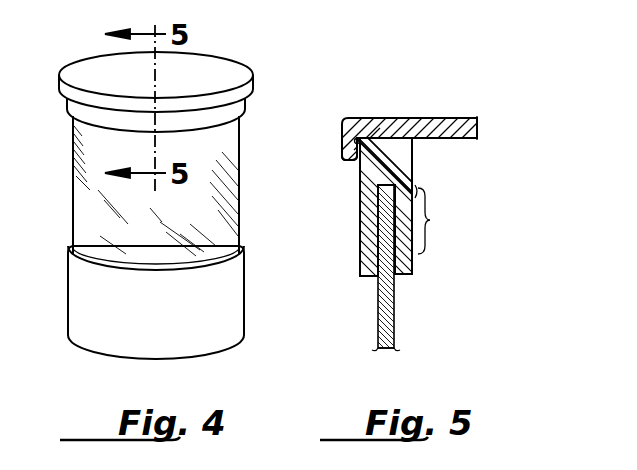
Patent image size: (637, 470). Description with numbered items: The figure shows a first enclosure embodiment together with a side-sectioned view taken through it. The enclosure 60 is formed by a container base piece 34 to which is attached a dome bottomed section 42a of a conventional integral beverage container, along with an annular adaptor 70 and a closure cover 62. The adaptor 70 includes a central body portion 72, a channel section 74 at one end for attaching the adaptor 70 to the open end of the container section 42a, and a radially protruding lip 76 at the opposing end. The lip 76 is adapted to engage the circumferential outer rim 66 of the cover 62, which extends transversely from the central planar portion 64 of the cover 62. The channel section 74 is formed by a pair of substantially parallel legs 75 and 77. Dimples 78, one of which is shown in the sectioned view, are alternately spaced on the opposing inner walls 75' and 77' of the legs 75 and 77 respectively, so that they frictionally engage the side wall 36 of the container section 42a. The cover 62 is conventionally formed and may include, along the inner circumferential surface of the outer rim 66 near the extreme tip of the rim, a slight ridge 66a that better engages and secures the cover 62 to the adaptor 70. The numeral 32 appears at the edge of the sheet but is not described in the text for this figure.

In FIG. 4, the container 32 is at (7, 81).
In FIG. 4, the container base piece 34 is at (232, 311).
In FIG. 5, the side wall 36 is at (398, 348).
In FIG. 4, the dome bottomed section 42a is at (240, 223).
In FIG. 5, the dome bottomed section 42a is at (396, 331).
In FIG. 4, the enclosure 60 is at (245, 133).
In FIG. 4, the closure cover 62 is at (96, 72).
In FIG. 5, the closure cover 62 is at (455, 118).
In FIG. 5, the central planar portion 64 is at (407, 128).
In FIG. 5, the circumferential outer rim 66 is at (345, 150).
In FIG. 5, the slight ridge 66a is at (357, 163).
In FIG. 4, the annular adaptor 70 is at (67, 103).
In FIG. 5, the annular adaptor 70 is at (413, 173).
In FIG. 5, the central body portion 72 is at (396, 152).
In FIG. 5, the channel section 74 is at (432, 219).
In FIG. 5, the leg 75 is at (344, 282).
In FIG. 5, the inner wall 75' is at (356, 302).
In FIG. 5, the radially protruding lip 76 is at (358, 136).
In FIG. 5, the leg 77 is at (437, 273).
In FIG. 5, the inner wall 77' is at (430, 293).
In FIG. 5, the dimples 78 is at (372, 251).